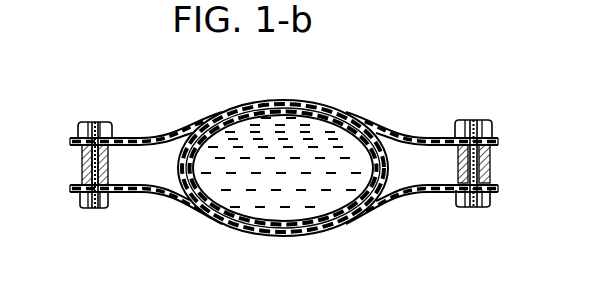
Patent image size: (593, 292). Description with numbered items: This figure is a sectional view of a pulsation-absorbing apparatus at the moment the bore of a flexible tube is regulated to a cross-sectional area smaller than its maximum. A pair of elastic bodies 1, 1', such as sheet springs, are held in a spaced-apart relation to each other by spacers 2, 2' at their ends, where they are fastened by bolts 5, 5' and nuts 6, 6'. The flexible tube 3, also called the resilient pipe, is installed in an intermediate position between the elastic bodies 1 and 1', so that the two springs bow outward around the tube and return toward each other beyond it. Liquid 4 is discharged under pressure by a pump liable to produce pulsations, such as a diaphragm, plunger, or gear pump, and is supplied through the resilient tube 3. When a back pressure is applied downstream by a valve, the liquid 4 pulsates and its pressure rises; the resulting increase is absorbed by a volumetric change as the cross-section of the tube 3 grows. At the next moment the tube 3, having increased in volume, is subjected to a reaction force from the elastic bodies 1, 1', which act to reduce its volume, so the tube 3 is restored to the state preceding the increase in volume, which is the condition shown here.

The elastic body 1 is at (284, 109).
The elastic body 1' is at (284, 229).
The spacer 2 is at (69, 165).
The spacer 2' is at (498, 163).
The flexible tube 3 is at (388, 170).
The liquid 4 is at (178, 170).
The bolt 5 is at (106, 108).
The bolt 5' is at (489, 105).
The nut 6 is at (75, 215).
The nut 6' is at (490, 216).